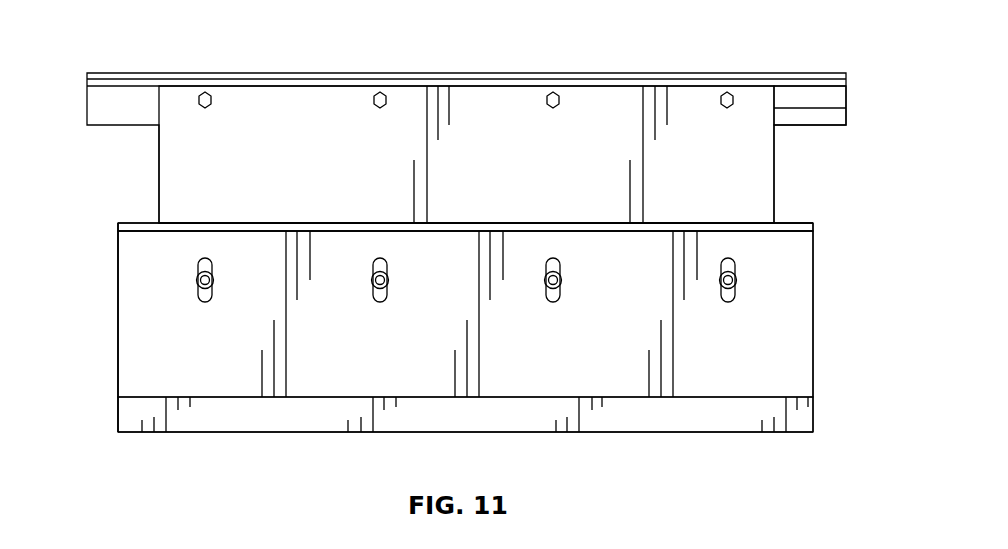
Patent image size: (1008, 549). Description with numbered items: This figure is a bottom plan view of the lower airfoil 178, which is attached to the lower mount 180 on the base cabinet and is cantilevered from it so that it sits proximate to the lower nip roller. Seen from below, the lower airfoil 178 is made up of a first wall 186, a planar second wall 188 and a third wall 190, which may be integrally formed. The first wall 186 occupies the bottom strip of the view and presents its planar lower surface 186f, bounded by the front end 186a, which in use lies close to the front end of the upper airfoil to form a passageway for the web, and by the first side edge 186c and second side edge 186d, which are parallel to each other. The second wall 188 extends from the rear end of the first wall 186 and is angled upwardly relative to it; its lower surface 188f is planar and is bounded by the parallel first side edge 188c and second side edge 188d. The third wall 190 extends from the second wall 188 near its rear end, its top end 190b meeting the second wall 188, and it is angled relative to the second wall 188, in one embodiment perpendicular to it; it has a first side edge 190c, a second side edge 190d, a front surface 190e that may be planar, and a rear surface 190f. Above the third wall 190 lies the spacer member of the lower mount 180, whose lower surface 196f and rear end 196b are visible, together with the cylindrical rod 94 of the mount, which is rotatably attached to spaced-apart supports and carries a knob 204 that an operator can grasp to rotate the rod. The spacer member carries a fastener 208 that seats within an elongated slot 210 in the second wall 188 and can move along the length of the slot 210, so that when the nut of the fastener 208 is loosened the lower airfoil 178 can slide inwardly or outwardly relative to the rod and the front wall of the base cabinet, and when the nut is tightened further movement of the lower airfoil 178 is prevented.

The lower mount 180 is at (135, 47).
The knob 204 is at (208, 92).
The rear end of spacer member 196b is at (468, 86).
The cylindrical rod 94 is at (812, 86).
The lower surface of spacer member 196f is at (337, 173).
The third wall 190 is at (200, 223).
The top end of third wall 190b is at (470, 223).
The rear surface of third wall 190f is at (718, 223).
The second side edge of third wall 190d is at (118, 228).
The first side edge of third wall 190c is at (813, 226).
The front surface of third wall 190e is at (786, 232).
The second wall 188 is at (150, 288).
The lower surface of second wall 188f is at (467, 323).
The first side edge of second wall 188c is at (813, 286).
The second side edge of second wall 188d is at (118, 366).
The fastener 208 is at (213, 276).
The elongated slot 210 is at (208, 300).
The lower airfoil 178 is at (118, 388).
The first wall 186 is at (252, 418).
The lower surface of first wall 186f is at (463, 425).
The front end of first wall 186a is at (685, 434).
The first side edge of first wall 186c is at (813, 418).
The second side edge of first wall 186d is at (118, 420).